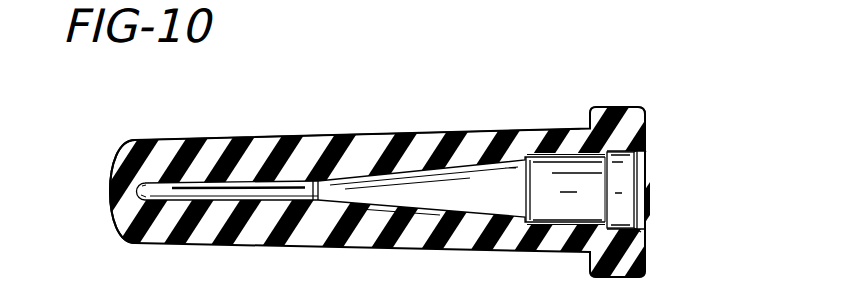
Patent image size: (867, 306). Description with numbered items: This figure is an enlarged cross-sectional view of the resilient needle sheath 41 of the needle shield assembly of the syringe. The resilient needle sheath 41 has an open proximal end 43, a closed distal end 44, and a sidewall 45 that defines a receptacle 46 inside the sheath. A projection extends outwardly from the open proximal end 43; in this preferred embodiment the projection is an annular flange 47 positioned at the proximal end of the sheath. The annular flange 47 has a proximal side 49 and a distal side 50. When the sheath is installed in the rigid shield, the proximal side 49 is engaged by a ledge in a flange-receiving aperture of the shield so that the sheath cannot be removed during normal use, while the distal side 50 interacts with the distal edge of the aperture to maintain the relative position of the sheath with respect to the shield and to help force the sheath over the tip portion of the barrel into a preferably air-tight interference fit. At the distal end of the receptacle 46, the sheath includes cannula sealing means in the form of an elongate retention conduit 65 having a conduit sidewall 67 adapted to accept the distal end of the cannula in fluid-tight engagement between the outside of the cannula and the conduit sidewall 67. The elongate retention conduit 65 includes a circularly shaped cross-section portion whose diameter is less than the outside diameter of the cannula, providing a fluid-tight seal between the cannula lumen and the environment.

The resilient needle sheath 41 is at (398, 118).
The open proximal end 43 is at (573, 127).
The closed distal end 44 is at (113, 186).
The sidewall 45 is at (331, 138).
The receptacle 46 is at (463, 198).
The annular flange 47 is at (623, 105).
The proximal side of the flange 49 is at (647, 150).
The distal side of the flange 50 is at (586, 255).
The elongate retention conduit 65 is at (160, 199).
The conduit sidewall 67 is at (263, 200).